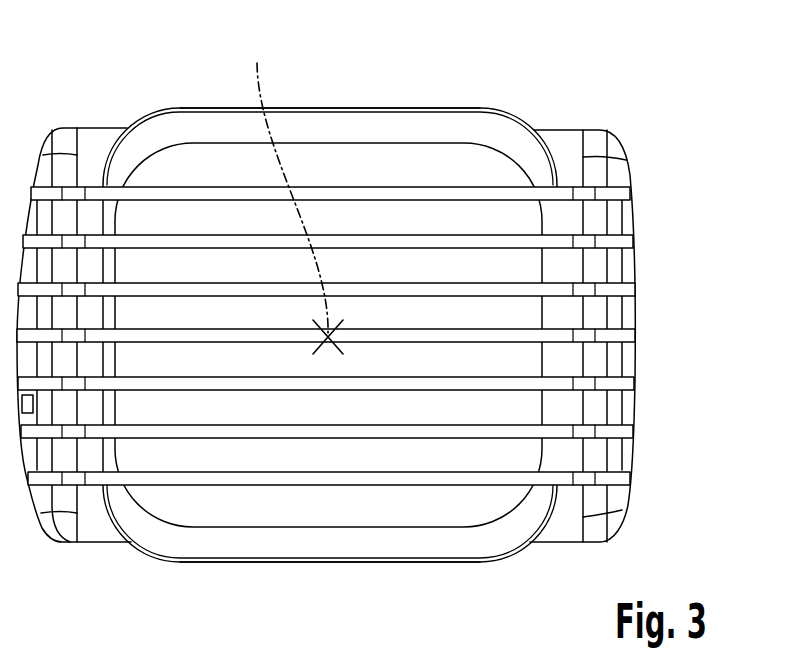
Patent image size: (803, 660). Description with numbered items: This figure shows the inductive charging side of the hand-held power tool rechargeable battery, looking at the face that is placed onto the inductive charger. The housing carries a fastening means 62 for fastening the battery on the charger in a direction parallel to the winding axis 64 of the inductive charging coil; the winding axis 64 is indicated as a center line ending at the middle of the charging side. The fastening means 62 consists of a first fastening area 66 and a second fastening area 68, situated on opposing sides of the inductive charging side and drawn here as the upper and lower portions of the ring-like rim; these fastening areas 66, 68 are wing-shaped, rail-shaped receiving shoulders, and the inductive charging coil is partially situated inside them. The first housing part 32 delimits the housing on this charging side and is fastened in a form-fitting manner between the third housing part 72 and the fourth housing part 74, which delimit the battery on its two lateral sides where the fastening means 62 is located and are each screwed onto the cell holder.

The first housing part 32 is at (597, 313).
The fastening means 62 is at (342, 543).
The winding axis 64 is at (293, 193).
The first fastening area 66 is at (358, 127).
The second fastening area 68 is at (330, 521).
The third housing part 72 is at (190, 125).
The fourth housing part 74 is at (193, 540).